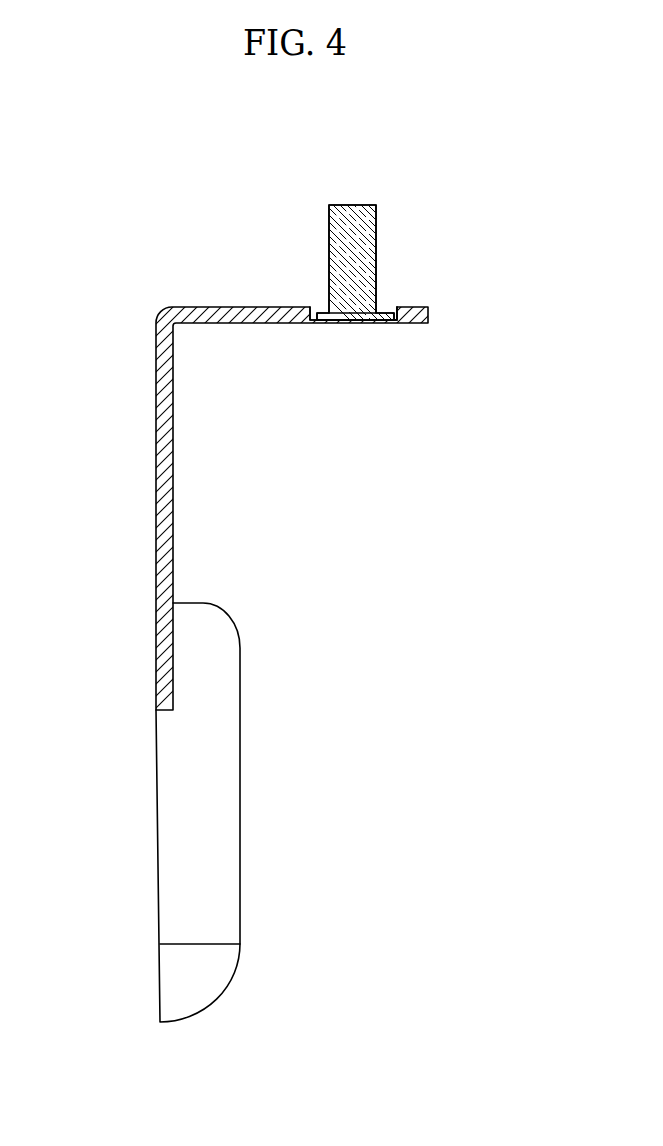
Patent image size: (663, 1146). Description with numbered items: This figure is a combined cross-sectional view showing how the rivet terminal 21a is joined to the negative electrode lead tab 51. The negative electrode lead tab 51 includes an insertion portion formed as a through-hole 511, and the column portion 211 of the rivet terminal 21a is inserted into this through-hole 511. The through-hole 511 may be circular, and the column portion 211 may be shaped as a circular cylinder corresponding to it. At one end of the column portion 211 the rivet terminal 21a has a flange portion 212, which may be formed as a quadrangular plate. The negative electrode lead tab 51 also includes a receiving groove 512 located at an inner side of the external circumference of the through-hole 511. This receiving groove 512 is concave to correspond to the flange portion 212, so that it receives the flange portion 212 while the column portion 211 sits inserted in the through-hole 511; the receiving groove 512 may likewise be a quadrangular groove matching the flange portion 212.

The negative electrode lead tab 51 is at (156, 357).
The rivet terminal 21a is at (329, 238).
The column portion 211 is at (357, 278).
The flange portion 212 is at (320, 324).
The through-hole 511 is at (378, 310).
The receiving groove 512 is at (385, 322).